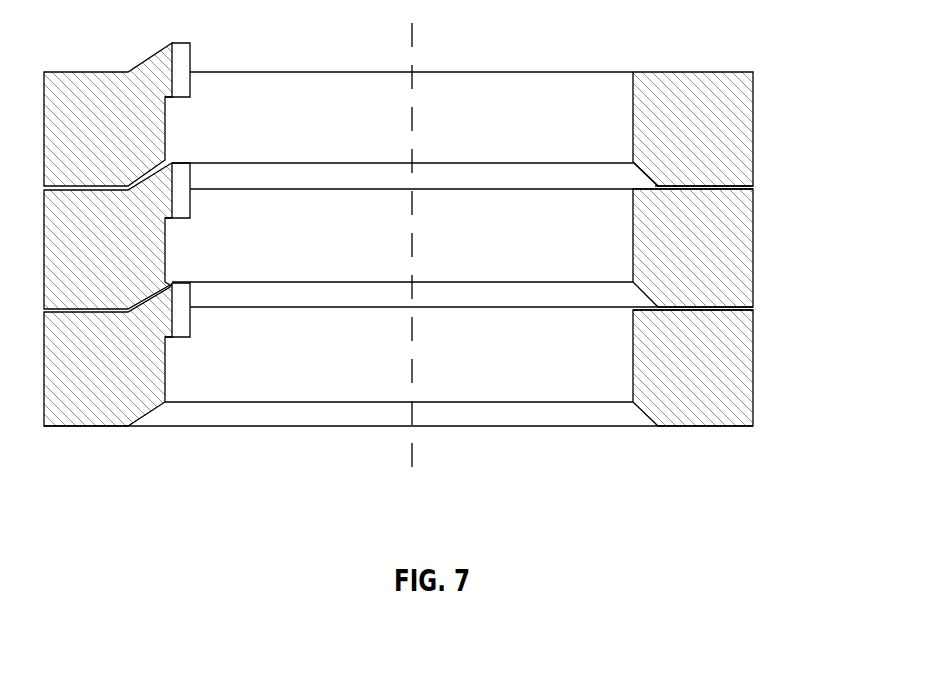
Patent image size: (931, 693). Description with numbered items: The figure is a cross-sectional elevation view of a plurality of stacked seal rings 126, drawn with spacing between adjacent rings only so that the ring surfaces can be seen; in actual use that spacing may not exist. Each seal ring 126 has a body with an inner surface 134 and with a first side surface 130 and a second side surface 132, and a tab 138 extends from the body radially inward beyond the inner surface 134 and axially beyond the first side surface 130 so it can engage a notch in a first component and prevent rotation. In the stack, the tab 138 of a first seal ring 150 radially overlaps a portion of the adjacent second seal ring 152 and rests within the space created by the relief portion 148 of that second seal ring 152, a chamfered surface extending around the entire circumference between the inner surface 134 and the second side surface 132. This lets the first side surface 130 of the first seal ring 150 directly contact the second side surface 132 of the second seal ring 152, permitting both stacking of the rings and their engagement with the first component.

The seal ring 126 is at (94, 145).
The first side surface 130 is at (724, 186).
The second side surface 132 is at (673, 190).
The inner surface 134 is at (472, 368).
The tab 138 is at (180, 205).
The relief portion 148 is at (643, 178).
The first seal ring 150 is at (754, 268).
The second seal ring 152 is at (754, 131).